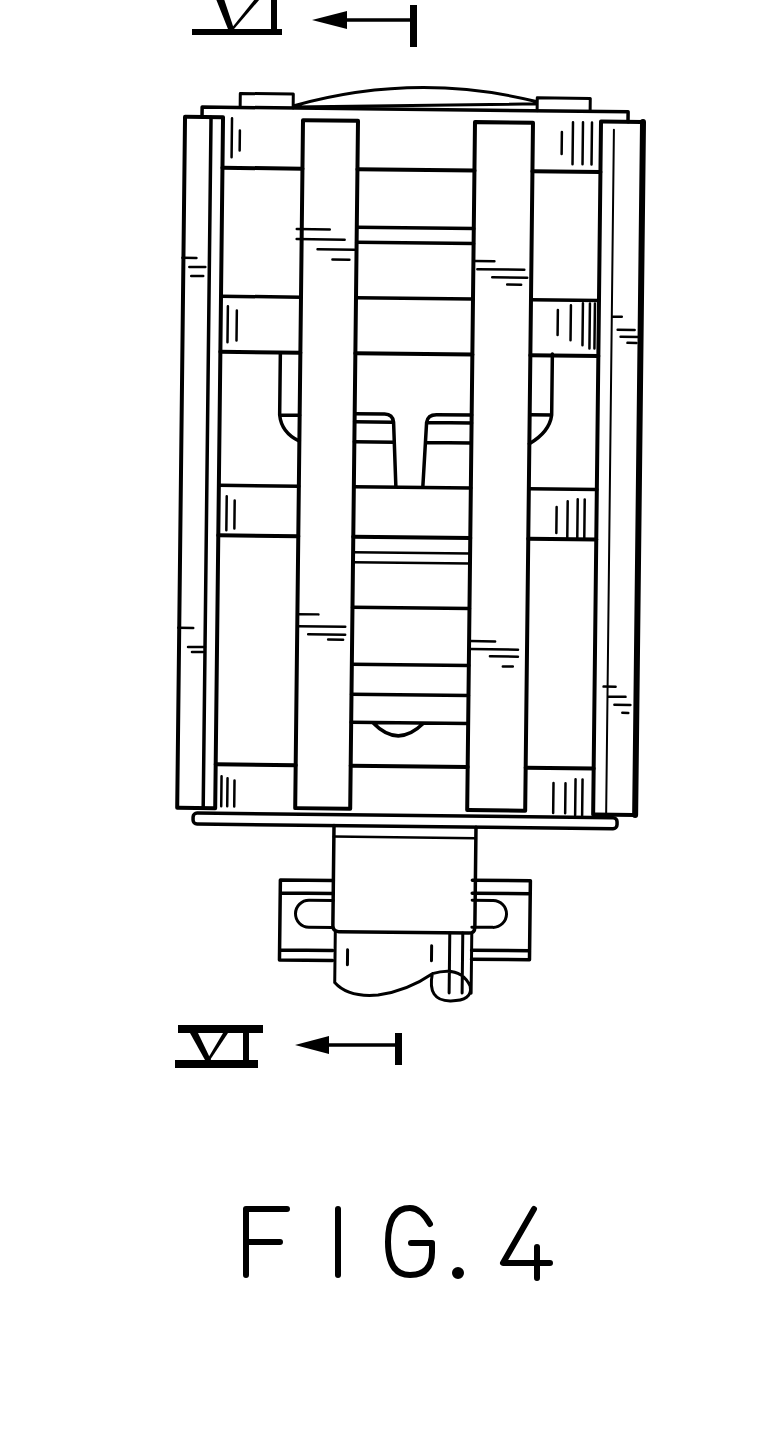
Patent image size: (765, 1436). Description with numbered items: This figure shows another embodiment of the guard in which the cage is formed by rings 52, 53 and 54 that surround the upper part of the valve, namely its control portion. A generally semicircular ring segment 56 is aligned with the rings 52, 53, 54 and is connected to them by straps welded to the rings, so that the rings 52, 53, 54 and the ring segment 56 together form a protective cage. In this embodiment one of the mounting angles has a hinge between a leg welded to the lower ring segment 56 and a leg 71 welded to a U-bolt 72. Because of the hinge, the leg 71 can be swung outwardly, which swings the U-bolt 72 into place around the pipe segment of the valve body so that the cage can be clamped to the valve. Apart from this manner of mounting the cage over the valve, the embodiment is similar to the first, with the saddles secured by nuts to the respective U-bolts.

The ring 52 is at (264, 169).
The ring 53 is at (248, 351).
The ring 54 is at (257, 540).
The ring segment 56 is at (237, 792).
The leg 71 is at (432, 868).
The U-bolt 72 is at (490, 917).